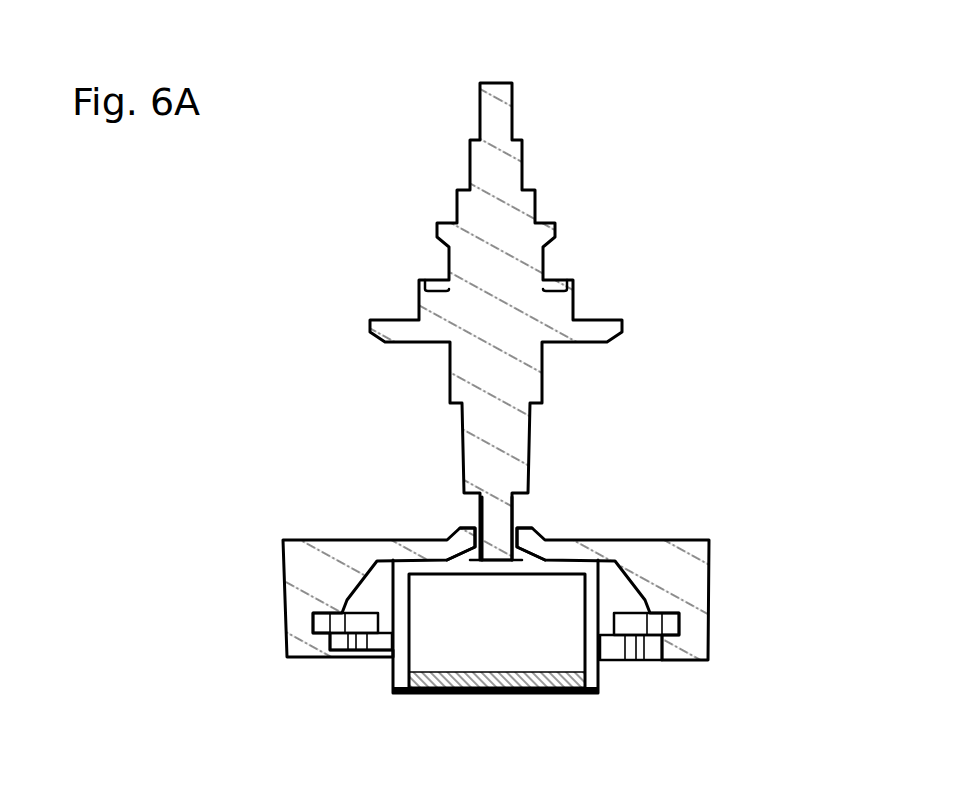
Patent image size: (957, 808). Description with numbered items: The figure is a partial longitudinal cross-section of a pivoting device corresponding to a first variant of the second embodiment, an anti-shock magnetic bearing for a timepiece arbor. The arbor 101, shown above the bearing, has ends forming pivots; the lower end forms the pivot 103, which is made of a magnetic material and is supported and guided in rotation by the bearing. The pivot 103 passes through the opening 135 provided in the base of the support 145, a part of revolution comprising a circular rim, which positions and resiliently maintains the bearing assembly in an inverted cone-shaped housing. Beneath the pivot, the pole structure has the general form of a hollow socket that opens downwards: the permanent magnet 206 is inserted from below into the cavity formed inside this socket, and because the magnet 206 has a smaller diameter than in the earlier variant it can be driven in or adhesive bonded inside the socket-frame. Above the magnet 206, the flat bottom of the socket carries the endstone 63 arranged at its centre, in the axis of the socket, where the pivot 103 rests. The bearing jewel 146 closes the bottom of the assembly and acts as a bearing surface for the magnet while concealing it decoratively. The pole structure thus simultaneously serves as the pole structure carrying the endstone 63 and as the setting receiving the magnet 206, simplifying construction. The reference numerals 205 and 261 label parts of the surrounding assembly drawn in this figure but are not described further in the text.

The arbor 101 is at (628, 267).
The housing 205 is at (290, 523).
The pivot 103 is at (488, 513).
The opening 135 is at (521, 515).
The support 145 is at (307, 592).
The right fastener 261 is at (613, 598).
The permanent magnet 206 is at (512, 647).
The endstone 63 is at (502, 560).
The bearing jewel 146 is at (507, 680).